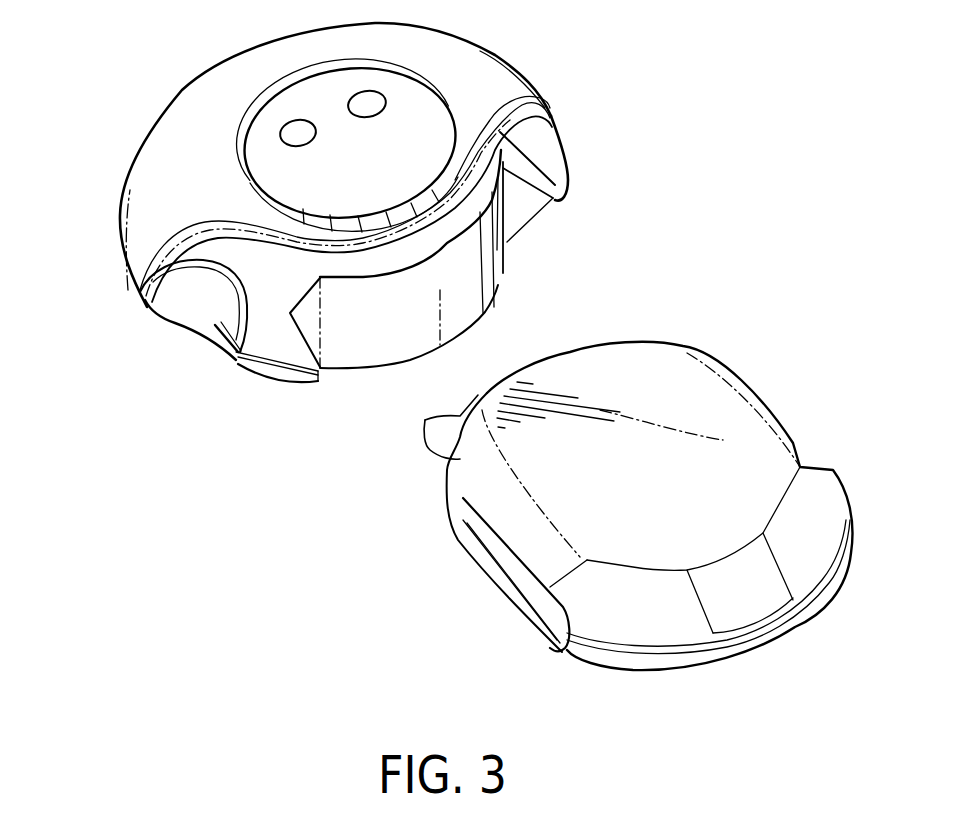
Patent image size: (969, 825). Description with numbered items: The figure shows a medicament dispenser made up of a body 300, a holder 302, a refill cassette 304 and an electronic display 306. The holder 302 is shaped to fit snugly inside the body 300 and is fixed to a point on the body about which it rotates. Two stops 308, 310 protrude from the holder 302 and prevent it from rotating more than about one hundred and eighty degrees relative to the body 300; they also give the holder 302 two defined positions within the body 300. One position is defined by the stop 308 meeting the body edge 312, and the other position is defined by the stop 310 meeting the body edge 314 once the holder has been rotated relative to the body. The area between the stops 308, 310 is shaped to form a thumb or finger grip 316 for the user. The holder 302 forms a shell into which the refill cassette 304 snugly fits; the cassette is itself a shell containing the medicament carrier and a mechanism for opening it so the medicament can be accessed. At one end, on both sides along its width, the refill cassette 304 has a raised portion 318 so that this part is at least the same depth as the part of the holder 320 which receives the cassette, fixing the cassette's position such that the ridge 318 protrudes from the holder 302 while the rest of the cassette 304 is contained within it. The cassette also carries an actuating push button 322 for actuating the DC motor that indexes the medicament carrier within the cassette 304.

The body 300 is at (497, 52).
The holder 302 is at (290, 387).
The refill cassette 304 is at (760, 397).
The electronic display 306 is at (311, 101).
The stop 308 is at (150, 308).
The stop 310 is at (233, 360).
The body edge 312 is at (140, 288).
The body edge 314 is at (547, 118).
The thumb or finger grip 316 is at (183, 330).
The raised portion 318 is at (813, 570).
The part of the holder 320 is at (468, 280).
The actuating push button 322 is at (437, 448).